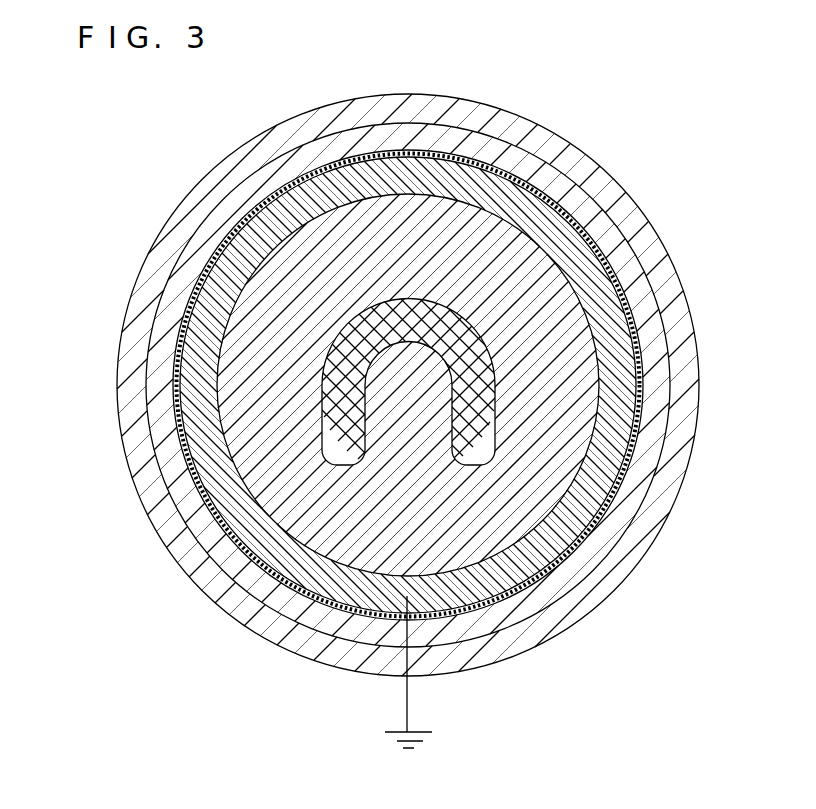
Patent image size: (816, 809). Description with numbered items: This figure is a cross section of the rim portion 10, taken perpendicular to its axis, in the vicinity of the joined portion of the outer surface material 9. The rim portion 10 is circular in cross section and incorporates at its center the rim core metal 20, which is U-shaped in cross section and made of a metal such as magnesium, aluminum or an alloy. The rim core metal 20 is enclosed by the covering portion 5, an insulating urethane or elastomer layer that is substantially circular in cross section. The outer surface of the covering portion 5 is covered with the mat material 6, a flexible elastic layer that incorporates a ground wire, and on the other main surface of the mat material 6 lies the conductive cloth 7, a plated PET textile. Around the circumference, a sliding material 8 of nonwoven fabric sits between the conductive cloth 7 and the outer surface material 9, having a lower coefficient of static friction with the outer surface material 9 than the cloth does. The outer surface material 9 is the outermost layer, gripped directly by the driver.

The rim portion 10 is at (566, 84).
The outer surface material 9 is at (613, 187).
The sliding material 8 is at (287, 158).
The conductive cloth 7 is at (637, 317).
The mat material 6 is at (623, 405).
The covering portion 5 is at (586, 545).
The rim core metal 20 is at (333, 404).